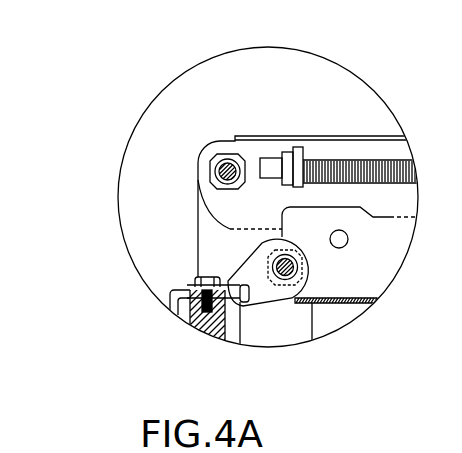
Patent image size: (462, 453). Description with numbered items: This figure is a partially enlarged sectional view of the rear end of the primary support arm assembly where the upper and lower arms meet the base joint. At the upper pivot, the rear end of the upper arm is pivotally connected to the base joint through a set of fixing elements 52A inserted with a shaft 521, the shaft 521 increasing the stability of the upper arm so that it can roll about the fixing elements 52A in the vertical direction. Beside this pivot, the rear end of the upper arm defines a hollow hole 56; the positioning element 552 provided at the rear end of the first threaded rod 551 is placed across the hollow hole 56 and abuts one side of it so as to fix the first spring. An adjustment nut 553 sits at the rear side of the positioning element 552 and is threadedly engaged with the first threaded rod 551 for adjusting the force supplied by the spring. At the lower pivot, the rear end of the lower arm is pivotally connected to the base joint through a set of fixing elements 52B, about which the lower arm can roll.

The set of fixing elements 52A is at (227, 155).
The shaft 521 is at (210, 172).
The hollow hole 56 is at (271, 165).
The adjustment nut 553 is at (282, 184).
The positioning element 552 is at (298, 147).
The first threaded rod 551 is at (347, 168).
The set of fixing elements 52B is at (303, 267).